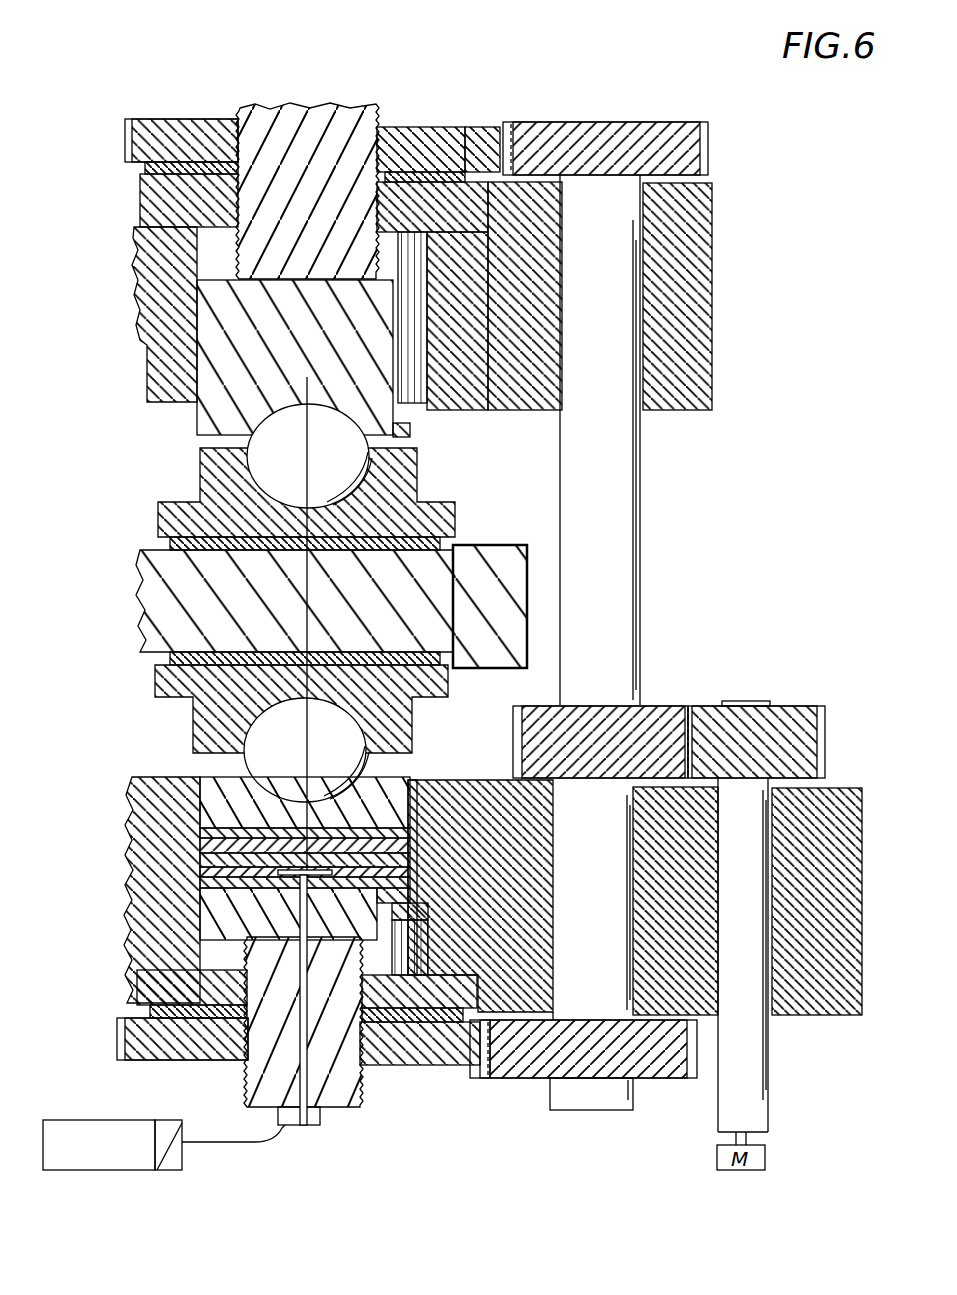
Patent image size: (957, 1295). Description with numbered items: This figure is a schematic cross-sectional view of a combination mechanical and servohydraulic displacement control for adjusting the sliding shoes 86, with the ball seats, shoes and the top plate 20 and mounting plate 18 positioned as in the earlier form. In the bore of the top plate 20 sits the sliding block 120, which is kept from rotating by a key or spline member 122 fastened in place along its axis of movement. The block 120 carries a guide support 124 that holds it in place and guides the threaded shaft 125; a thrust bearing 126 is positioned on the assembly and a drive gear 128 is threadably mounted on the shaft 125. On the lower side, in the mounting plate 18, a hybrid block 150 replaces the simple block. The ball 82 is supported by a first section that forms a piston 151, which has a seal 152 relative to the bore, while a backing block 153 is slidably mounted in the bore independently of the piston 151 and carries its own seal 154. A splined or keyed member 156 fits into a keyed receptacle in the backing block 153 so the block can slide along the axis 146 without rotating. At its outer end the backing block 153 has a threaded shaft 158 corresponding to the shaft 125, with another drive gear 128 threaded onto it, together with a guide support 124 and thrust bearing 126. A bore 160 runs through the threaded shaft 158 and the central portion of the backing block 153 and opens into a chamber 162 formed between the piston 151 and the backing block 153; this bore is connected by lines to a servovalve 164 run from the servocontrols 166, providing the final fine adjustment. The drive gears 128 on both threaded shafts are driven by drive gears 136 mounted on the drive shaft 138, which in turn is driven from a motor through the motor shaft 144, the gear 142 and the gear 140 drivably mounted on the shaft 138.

The mounting plate 18 is at (842, 788).
The top plate 20 is at (693, 355).
The ball 82 is at (258, 458).
The sliding shoe 86 is at (193, 717).
The sliding block 120 is at (210, 421).
The key or spline member 122 is at (412, 408).
The guide support 124 is at (152, 200).
The threaded shaft 125 is at (357, 118).
The thrust bearing 126 is at (460, 127).
The drive gear 128 is at (482, 125).
The drive gear 136 is at (698, 150).
The drive shaft 138 is at (630, 578).
The gear 140 is at (665, 705).
The gear 142 is at (790, 705).
The motor shaft 144 is at (766, 1082).
The axis 146 is at (310, 626).
The hybrid block 150 is at (412, 780).
The piston 151 is at (215, 810).
The seal 152 is at (420, 790).
The backing block 153 is at (210, 915).
The seal 154 is at (210, 883).
The splined or keyed member 156 is at (372, 960).
The threaded shaft 158 is at (256, 1080).
The bore 160 is at (300, 1020).
The chamber 162 is at (210, 858).
The servovalve 164 is at (166, 1130).
The servocontrols 166 is at (58, 1172).